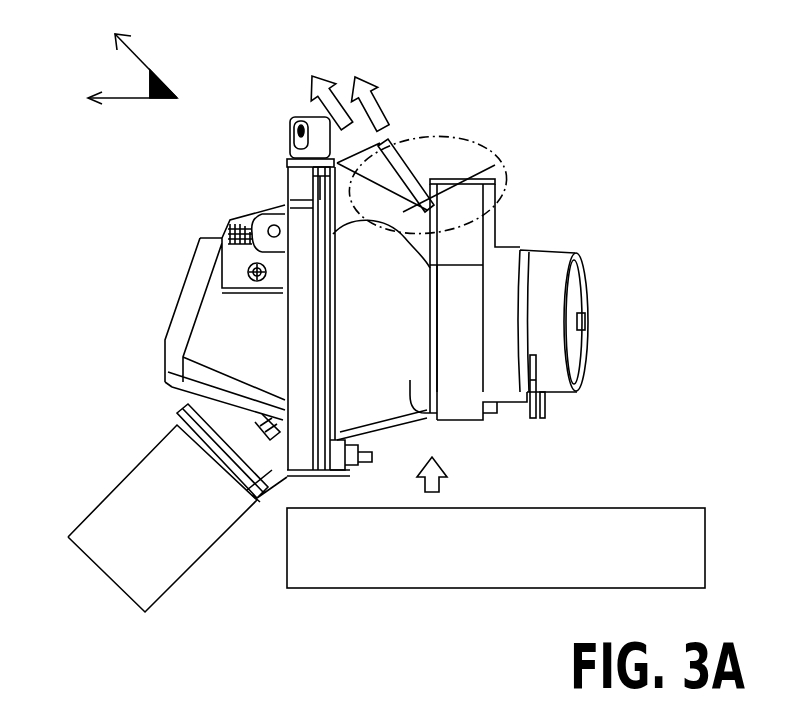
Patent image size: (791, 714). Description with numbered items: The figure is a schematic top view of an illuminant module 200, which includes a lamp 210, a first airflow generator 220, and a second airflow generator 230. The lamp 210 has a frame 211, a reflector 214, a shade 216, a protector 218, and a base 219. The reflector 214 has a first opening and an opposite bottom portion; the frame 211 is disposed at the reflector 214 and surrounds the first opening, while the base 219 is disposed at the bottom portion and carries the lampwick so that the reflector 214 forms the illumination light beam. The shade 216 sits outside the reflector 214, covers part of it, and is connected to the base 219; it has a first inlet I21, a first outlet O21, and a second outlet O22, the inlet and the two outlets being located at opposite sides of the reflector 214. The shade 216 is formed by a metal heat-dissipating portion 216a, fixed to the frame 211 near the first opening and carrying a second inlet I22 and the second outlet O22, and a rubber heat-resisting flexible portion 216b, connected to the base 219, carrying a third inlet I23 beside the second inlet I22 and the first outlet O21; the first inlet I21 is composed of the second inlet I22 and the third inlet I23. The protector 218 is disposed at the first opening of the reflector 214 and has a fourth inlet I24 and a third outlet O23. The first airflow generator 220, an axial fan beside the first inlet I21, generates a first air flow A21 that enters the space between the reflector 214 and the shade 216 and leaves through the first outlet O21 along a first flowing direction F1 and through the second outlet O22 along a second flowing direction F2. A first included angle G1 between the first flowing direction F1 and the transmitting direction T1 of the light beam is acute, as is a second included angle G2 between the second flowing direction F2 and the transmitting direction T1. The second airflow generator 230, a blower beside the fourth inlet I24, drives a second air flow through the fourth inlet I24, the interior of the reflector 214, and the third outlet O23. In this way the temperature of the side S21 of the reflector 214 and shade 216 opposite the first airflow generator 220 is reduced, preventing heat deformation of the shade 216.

The illuminant module 200 is at (718, 437).
The lamp 210 is at (608, 124).
The frame 211 is at (298, 430).
The reflector 214 is at (414, 388).
The shade 216 is at (550, 275).
The heat-dissipating portion 216a is at (470, 168).
The heat-resisting flexible portion 216b is at (470, 205).
The protector 218 is at (212, 321).
The base 219 is at (507, 286).
The first airflow generator 220 is at (700, 552).
The second airflow generator 230 is at (88, 528).
The first air flow A21 is at (366, 85).
The first flowing direction F1 is at (168, 58).
The second flowing direction F2 is at (150, 84).
The first included angle G1 is at (94, 79).
The second included angle G2 is at (150, 92).
The transmitting direction T1 is at (133, 98).
The first outlet O21 is at (402, 212).
The second outlet O22 is at (353, 138).
The third outlet O23 is at (240, 206).
The side S21 is at (430, 185).
The first inlet I21 is at (359, 565).
The second inlet I22 is at (377, 440).
The third inlet I23 is at (450, 431).
The fourth inlet I24 is at (197, 452).